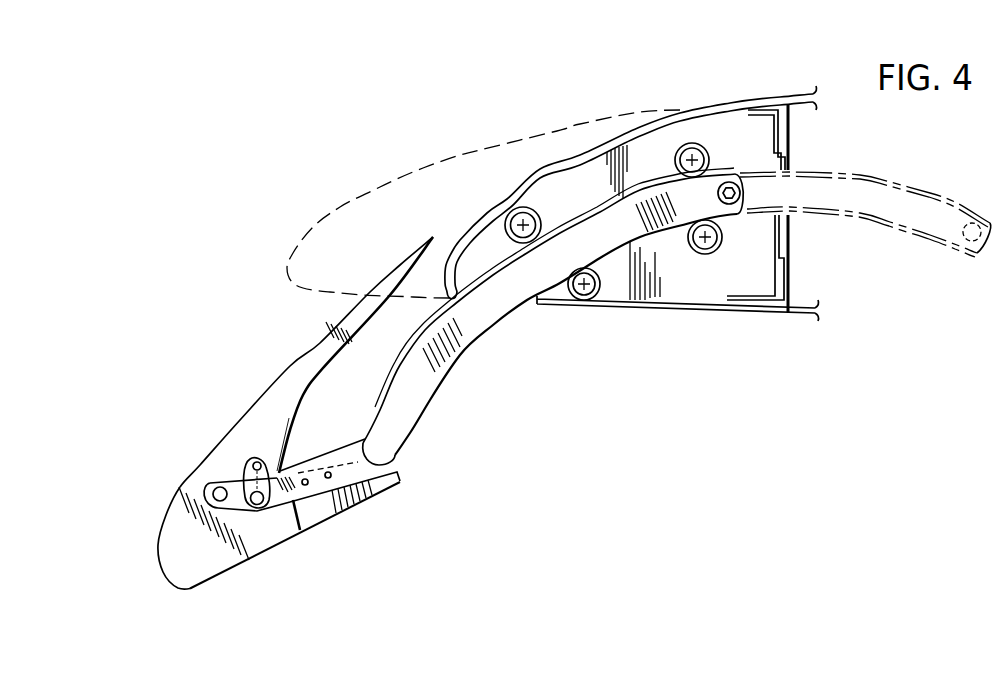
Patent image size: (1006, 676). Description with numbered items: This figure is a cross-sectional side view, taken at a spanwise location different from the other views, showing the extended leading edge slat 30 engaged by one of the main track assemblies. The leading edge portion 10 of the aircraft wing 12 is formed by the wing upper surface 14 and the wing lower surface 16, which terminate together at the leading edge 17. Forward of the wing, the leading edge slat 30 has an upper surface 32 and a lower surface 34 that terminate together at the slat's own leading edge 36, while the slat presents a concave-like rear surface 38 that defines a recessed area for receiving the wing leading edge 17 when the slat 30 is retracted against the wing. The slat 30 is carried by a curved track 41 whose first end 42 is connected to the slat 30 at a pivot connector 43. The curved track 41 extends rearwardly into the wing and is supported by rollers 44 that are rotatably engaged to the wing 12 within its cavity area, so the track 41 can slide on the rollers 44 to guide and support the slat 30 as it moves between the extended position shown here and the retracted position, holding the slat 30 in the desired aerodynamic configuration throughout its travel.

The leading edge portion 10 is at (555, 130).
The aircraft wing 12 is at (757, 85).
The wing upper surface 14 is at (718, 103).
The wing lower surface 16 is at (710, 310).
The leading edge 17 is at (445, 284).
The leading edge slat 30 is at (420, 168).
The upper surface 32 is at (277, 379).
The lower surface 34 is at (256, 540).
The leading edge 36 is at (168, 588).
The concave-like rear surface 38 is at (327, 368).
The curved track 41 is at (498, 325).
The first end 42 is at (294, 470).
The pivot connector 43 is at (257, 512).
The rollers 44 is at (514, 209).